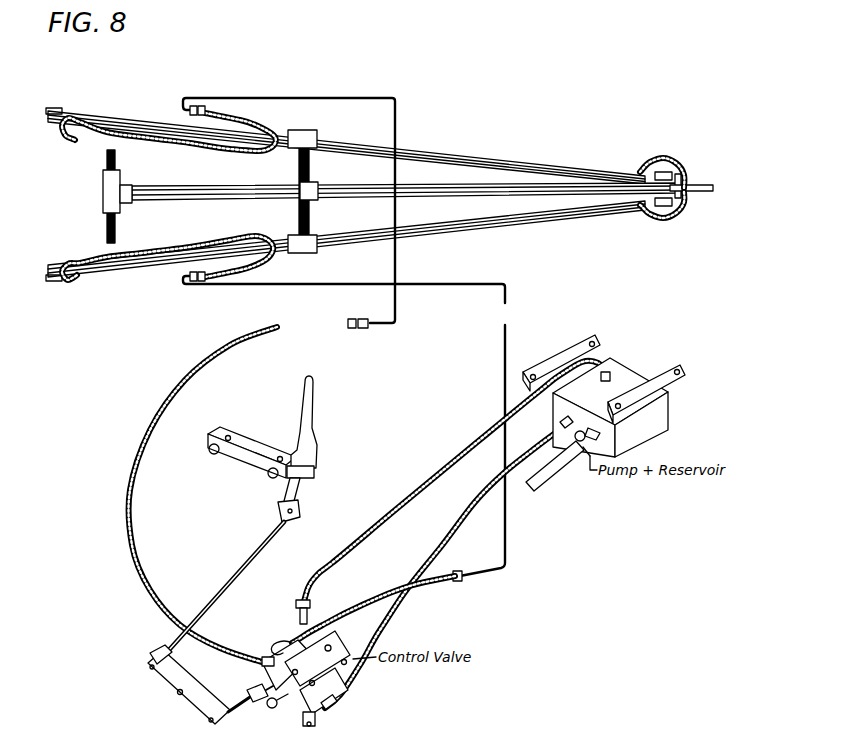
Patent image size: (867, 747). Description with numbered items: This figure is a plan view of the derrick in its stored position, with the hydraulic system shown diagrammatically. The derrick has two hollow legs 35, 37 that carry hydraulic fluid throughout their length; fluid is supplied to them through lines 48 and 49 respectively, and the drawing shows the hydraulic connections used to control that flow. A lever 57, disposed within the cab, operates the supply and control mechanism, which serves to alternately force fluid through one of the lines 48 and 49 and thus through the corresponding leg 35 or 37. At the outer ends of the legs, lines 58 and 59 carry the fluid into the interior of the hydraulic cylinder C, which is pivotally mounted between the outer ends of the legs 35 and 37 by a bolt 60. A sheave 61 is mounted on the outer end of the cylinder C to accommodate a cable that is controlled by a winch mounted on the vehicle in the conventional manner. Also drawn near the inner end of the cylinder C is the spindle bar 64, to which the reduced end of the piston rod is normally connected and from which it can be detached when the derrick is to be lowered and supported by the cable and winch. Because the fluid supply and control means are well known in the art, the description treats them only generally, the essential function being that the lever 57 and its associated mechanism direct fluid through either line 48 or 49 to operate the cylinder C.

The leg 35 is at (428, 151).
The leg 37 is at (345, 241).
The hydraulic cylinder C is at (446, 188).
The spindle bar 64 is at (115, 229).
The line 48 is at (84, 141).
The line 49 is at (78, 252).
The lever 57 is at (308, 398).
The line 58 is at (668, 161).
The line 59 is at (668, 212).
The bolt 60 is at (672, 175).
The sheave 61 is at (700, 190).